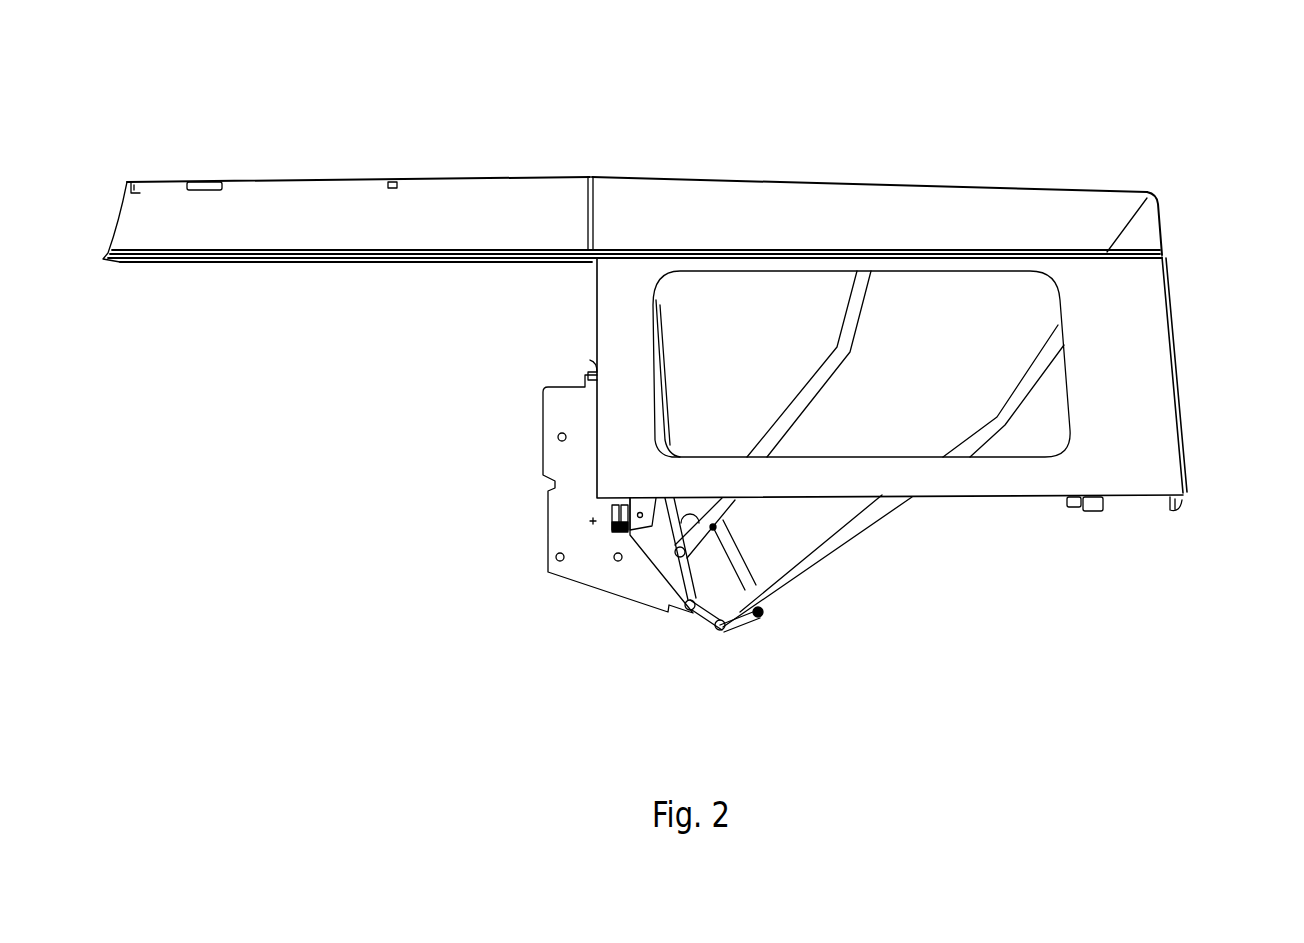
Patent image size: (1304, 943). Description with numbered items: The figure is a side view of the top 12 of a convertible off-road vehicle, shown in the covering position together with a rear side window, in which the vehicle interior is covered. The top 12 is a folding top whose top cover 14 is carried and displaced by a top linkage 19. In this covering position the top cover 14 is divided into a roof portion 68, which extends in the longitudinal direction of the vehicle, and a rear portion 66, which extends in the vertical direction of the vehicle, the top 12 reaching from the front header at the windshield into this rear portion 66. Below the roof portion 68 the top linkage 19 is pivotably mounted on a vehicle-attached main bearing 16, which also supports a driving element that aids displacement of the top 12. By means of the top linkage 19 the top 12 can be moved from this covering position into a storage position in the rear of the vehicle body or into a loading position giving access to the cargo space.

The top 12 is at (1029, 127).
The top cover 14 is at (481, 215).
The roof portion 68 is at (716, 177).
The rear portion 66 is at (1170, 342).
The main bearing 16 is at (597, 560).
The top linkage 19 is at (812, 572).